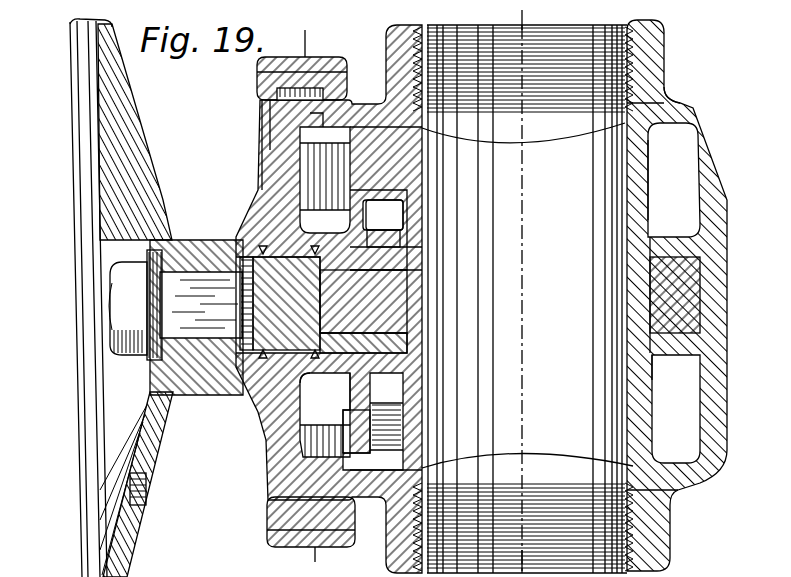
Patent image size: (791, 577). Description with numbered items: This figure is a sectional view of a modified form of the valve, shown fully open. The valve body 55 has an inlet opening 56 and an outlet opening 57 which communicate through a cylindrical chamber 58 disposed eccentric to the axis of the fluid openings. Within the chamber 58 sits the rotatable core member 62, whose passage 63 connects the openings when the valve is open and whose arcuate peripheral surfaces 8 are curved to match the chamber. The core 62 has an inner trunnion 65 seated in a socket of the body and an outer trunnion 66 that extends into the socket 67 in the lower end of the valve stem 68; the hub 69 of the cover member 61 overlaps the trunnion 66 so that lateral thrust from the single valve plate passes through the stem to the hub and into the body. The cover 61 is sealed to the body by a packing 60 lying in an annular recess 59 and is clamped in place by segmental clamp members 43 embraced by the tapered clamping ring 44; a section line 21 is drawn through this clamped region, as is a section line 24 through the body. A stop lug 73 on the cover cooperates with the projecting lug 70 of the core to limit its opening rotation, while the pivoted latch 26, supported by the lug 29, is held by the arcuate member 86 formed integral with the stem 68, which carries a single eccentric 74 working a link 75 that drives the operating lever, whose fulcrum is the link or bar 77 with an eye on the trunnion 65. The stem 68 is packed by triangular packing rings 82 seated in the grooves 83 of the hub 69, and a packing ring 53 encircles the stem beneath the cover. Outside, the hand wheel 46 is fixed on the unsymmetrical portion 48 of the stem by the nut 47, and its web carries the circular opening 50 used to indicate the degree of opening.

The arcuate peripheral surfaces 8 is at (629, 124).
The section line 21 is at (288, 33).
The eccentric 24 is at (500, 20).
The headed latch 26 is at (355, 428).
The lug 29 is at (380, 417).
The segmental clamp members 43 is at (262, 140).
The clamping ring 44 is at (257, 67).
The hand wheel 46 is at (82, 322).
The nut 47 is at (113, 343).
The portion of the valve stem 48 is at (183, 332).
The opening 50 is at (145, 462).
The packing ring 53 is at (337, 280).
The valve body 55 is at (723, 424).
The inlet opening 56 is at (664, 63).
The outlet opening 57 is at (625, 523).
The cylindrical chamber 58 is at (662, 119).
The annular recess 59 is at (320, 123).
The packing 60 is at (262, 133).
The cover member 61 is at (262, 176).
The rotatable core member 62 is at (638, 204).
The passage 63 is at (600, 397).
The trunnion 65 is at (683, 306).
The outer trunnion 66 is at (352, 337).
The socket 67 is at (325, 429).
The valve stem 68 is at (268, 378).
The hub 69 is at (325, 188).
The projecting lug 70 is at (277, 93).
The stop lug 73 is at (378, 195).
The eccentric 74 is at (407, 256).
The link 75 is at (407, 353).
The link or bar 77 is at (664, 357).
The packing rings 82 is at (260, 246).
The annular grooves 83 is at (313, 246).
The arcuate member 86 is at (367, 229).